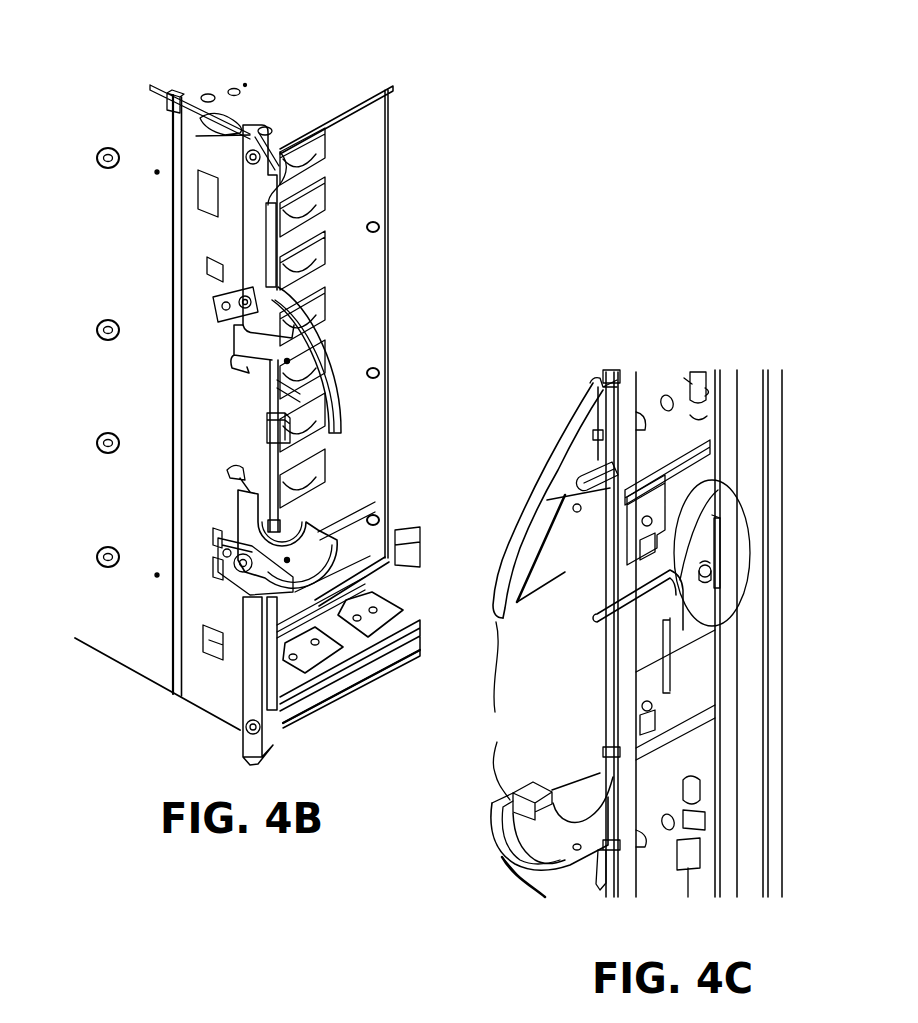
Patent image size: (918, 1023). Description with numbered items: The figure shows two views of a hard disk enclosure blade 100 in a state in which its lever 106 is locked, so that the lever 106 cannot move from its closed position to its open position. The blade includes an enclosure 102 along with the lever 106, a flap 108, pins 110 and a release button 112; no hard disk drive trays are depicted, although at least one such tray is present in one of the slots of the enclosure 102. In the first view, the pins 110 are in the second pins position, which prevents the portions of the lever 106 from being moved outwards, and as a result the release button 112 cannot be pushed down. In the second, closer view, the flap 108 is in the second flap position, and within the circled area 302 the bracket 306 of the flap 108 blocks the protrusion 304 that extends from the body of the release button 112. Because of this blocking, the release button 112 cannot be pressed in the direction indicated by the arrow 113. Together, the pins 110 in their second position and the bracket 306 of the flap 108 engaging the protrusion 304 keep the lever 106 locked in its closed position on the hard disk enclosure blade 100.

In FIG. 4B, the hard disk enclosure blade 100 is at (93, 688).
In FIG. 4C, the hard disk enclosure blade 100 is at (503, 902).
In FIG. 4B, the enclosure 102 is at (302, 107).
In FIG. 4B, the lever 106 is at (313, 553).
In FIG. 4C, the lever 106 is at (548, 637).
In FIG. 4C, the flap 108 is at (747, 400).
In FIG. 4B, the pins 110 is at (247, 478).
In FIG. 4B, the release button 112 is at (277, 400).
In FIG. 4C, the release button 112 is at (577, 638).
In FIG. 4C, the arrow 113 is at (560, 604).
In FIG. 4C, the circled area 302 is at (747, 583).
In FIG. 4C, the protrusion 304 is at (720, 625).
In FIG. 4C, the bracket 306 is at (717, 537).